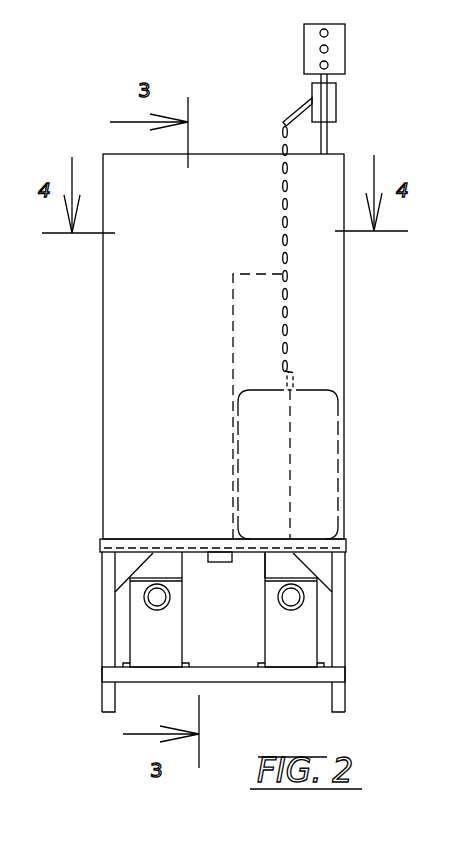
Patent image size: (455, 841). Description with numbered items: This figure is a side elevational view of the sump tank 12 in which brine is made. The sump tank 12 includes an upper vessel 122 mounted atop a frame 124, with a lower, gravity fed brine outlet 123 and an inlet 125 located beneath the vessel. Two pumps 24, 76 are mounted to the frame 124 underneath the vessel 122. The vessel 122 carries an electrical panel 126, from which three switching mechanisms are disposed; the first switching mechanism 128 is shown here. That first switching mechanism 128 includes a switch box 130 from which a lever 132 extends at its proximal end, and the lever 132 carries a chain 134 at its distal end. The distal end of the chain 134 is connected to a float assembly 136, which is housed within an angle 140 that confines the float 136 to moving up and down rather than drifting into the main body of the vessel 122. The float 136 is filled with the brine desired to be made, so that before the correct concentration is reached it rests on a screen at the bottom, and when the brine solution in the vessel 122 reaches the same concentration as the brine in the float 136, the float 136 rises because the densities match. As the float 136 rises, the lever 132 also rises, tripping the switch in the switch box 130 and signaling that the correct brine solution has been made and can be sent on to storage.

The sump tank 12 is at (92, 323).
The pump 24 is at (134, 618).
The pump 76 is at (268, 636).
The upper vessel 122 is at (344, 320).
The gravity fed brine outlet 123 is at (234, 562).
The frame 124 is at (347, 607).
The inlet 125 is at (266, 556).
The electrical panel 126 is at (345, 28).
The first switching mechanism 128 is at (366, 73).
The switch box 130 is at (336, 100).
The lever 132 is at (297, 110).
The chain 134 is at (287, 266).
The float assembly 136 is at (325, 390).
The angle 140 is at (233, 308).